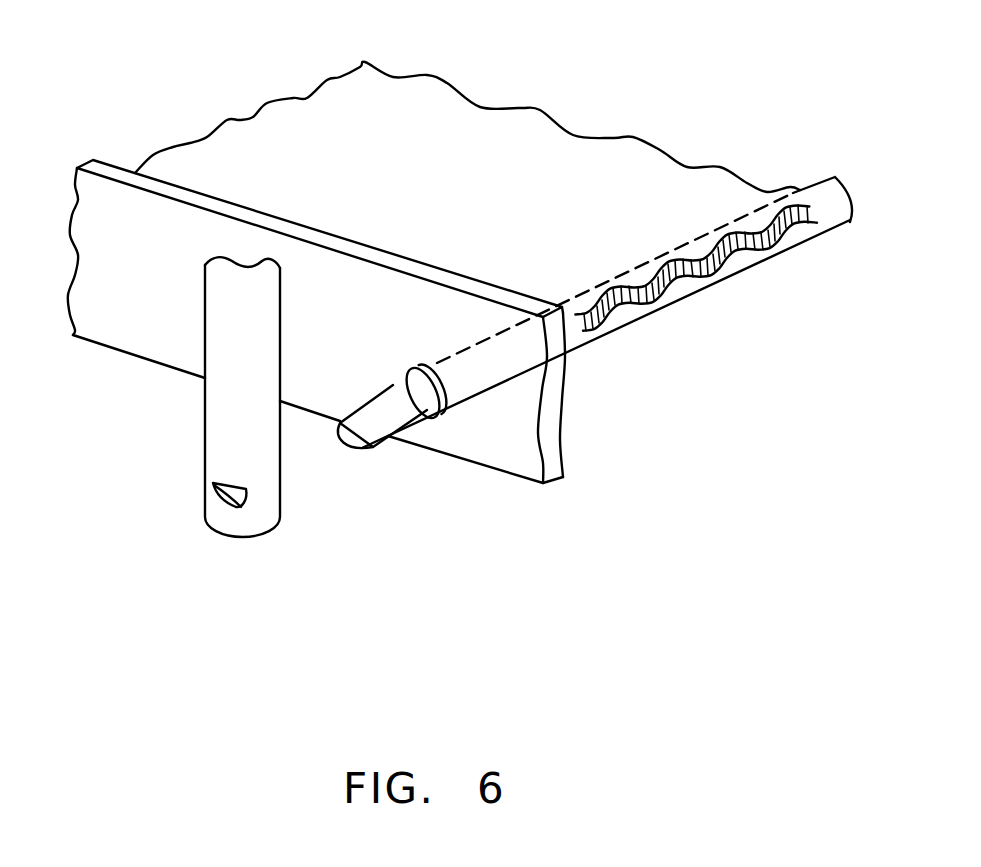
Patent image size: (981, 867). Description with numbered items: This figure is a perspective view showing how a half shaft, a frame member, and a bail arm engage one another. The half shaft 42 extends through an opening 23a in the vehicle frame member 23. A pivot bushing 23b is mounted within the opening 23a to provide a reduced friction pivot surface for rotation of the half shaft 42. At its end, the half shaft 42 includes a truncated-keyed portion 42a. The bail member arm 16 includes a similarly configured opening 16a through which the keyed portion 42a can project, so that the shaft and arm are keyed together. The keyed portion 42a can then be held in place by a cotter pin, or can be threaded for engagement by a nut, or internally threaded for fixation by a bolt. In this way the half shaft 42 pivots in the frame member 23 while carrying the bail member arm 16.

The vehicle frame member 23 is at (90, 222).
The opening 23a is at (460, 390).
The pivot bushing 23b is at (420, 363).
The half shaft 42 is at (832, 213).
The truncated-keyed portion 42a is at (357, 442).
The bail member arm 16 is at (228, 405).
The opening 16a is at (218, 497).